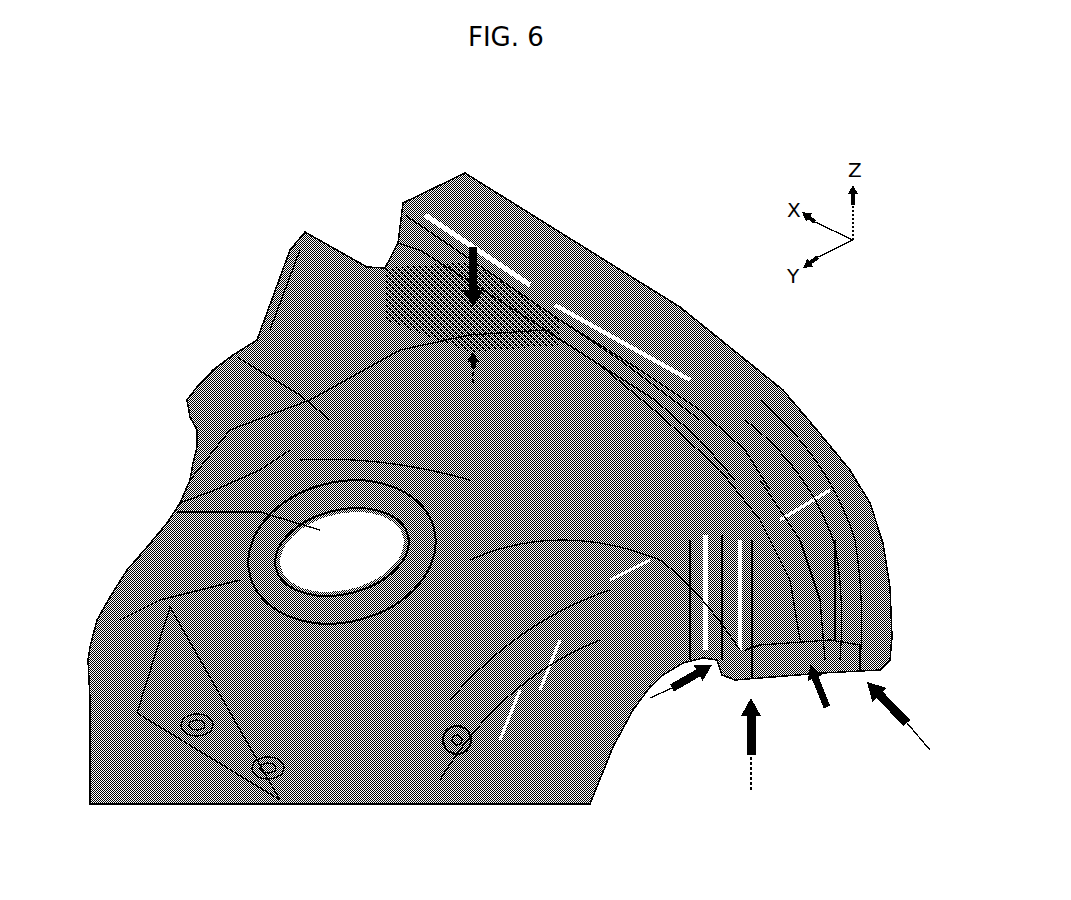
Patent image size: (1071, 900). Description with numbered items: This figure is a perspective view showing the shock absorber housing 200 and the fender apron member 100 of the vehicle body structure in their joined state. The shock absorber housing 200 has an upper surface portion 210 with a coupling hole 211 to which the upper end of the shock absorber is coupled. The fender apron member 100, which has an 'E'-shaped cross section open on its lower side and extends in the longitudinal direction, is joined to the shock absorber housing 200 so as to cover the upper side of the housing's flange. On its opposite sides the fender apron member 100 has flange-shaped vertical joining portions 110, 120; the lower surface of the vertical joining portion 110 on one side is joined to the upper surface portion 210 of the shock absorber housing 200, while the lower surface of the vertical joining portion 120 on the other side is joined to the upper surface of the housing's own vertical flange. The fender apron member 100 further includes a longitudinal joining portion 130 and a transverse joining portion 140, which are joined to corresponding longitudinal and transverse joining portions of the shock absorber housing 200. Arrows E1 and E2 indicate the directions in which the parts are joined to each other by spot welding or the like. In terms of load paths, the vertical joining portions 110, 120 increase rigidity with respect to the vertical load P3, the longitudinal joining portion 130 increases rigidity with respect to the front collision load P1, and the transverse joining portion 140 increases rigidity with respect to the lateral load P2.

The fender apron member 100 is at (596, 218).
The vertical joining portion 110 is at (685, 313).
The vertical joining portion 120 is at (838, 432).
The longitudinal joining portion 130 is at (848, 685).
The transverse joining portion 140 is at (722, 673).
The shock absorber housing 200 is at (165, 406).
The upper surface portion 210 is at (237, 357).
The coupling hole 211 is at (177, 512).
The joining direction arrow E1 is at (403, 212).
The joining direction arrow E2 is at (818, 712).
The front collision load P1 is at (895, 705).
The lateral load P2 is at (677, 700).
The vertical load P3 is at (745, 752).